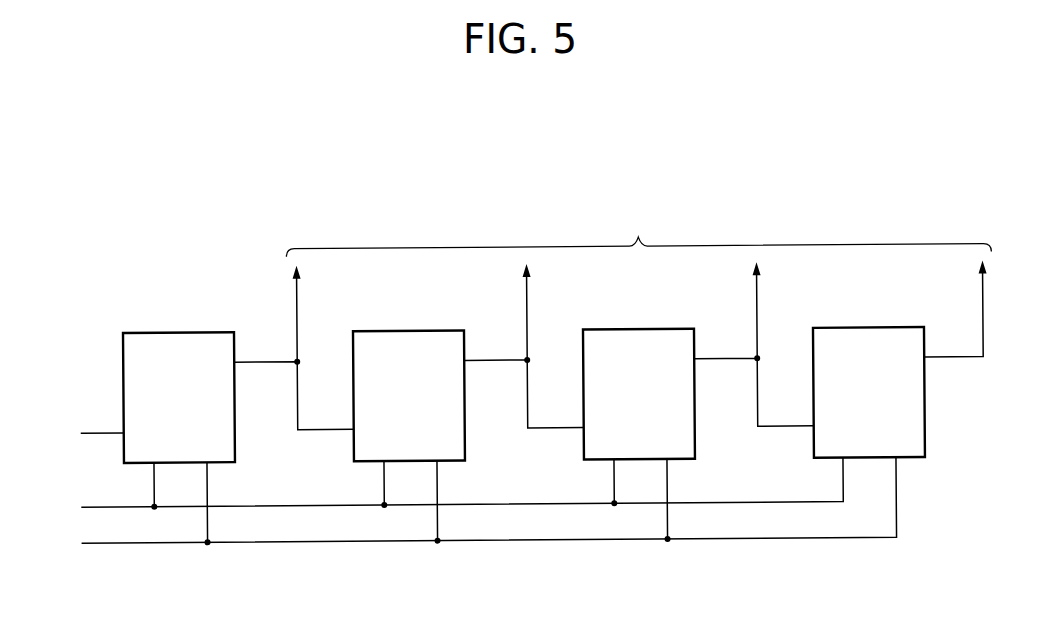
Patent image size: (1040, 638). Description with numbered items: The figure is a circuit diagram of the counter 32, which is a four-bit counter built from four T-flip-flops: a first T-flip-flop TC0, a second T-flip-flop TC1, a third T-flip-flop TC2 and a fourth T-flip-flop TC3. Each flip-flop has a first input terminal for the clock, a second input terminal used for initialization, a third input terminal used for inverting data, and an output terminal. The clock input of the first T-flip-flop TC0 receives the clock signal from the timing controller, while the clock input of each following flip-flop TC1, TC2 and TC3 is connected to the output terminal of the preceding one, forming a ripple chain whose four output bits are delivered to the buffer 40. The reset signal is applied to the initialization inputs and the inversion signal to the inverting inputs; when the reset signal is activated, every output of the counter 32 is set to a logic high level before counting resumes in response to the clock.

The counter 32 is at (914, 156).
The buffer 40 is at (638, 233).
The first T-flip-flop TC0 is at (206, 333).
The second T-flip-flop TC1 is at (436, 333).
The third T-flip-flop TC2 is at (666, 333).
The fourth T-flip-flop TC3 is at (896, 333).